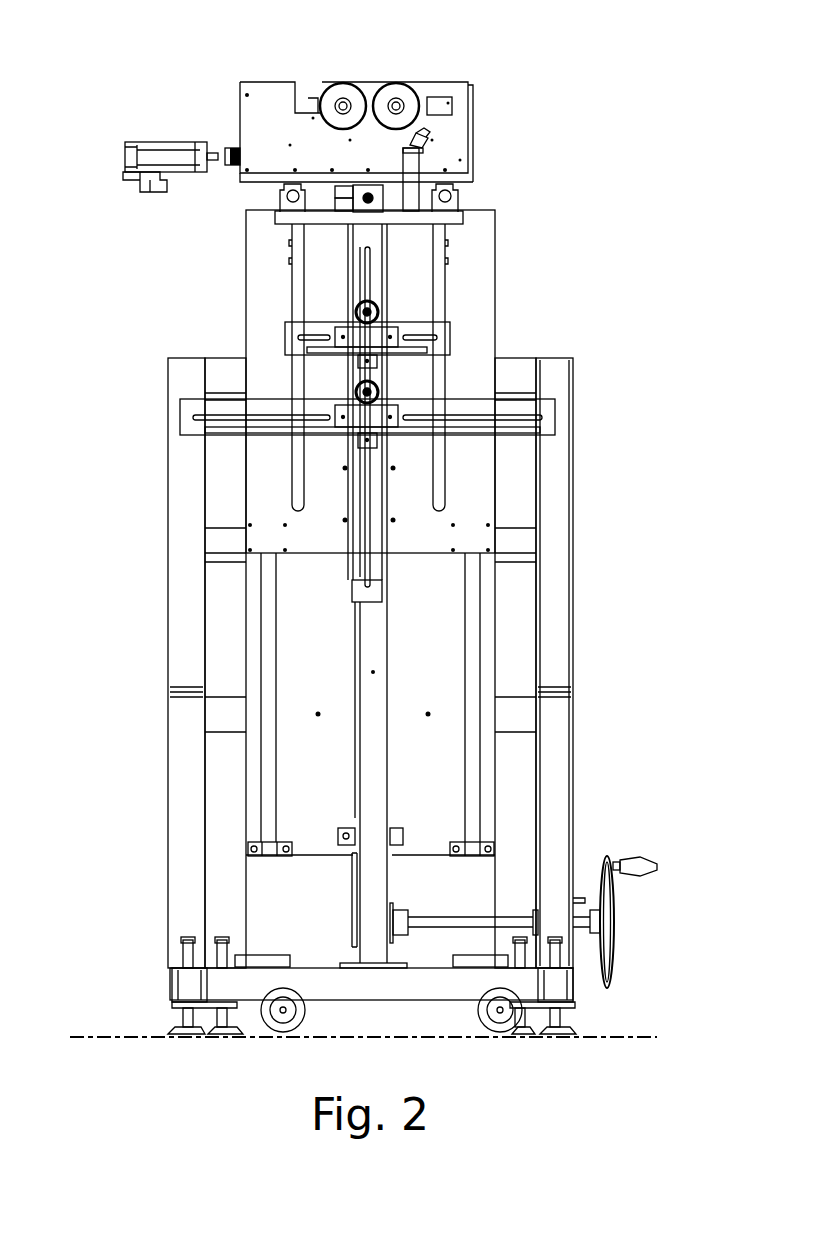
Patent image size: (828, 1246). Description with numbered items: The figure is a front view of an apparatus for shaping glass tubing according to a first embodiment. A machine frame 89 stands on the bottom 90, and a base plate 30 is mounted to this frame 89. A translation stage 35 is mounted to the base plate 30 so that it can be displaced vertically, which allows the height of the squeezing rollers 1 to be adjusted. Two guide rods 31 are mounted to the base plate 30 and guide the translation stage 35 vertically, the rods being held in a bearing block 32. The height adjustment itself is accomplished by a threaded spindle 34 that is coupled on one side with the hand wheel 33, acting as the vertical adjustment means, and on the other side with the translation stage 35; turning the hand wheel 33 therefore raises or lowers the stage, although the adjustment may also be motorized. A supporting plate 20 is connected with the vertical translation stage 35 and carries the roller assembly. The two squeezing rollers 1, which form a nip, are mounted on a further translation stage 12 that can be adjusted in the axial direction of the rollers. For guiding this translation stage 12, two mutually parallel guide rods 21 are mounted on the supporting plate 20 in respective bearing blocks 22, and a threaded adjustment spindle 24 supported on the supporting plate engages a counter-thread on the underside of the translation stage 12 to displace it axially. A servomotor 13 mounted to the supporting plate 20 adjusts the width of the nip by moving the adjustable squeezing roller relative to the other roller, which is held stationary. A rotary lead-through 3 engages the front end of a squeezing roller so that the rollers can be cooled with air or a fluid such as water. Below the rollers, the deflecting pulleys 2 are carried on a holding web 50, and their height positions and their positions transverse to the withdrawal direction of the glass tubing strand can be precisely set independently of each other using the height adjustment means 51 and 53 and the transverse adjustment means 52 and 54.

The squeezing rollers 1 is at (342, 88).
The deflecting pulleys 2 is at (357, 312).
The rotary lead-through 3 is at (405, 100).
The translation stage 12 is at (460, 128).
The servomotor 13 is at (147, 150).
The supporting plate 20 is at (410, 218).
The guide rods 21 is at (280, 195).
The bearing blocks 22 is at (277, 212).
The threaded adjustment spindle 24 is at (367, 188).
The base plate 30 is at (452, 612).
The guide rods 31 is at (269, 602).
The bearing block 32 is at (275, 856).
The hand wheel 33 is at (608, 937).
The threaded spindle 34 is at (388, 762).
The translation stage 35 is at (480, 263).
The holding web 50 is at (377, 882).
The height adjustment means 51 is at (378, 583).
The transverse adjustment means 52 is at (543, 407).
The height adjustment means 53 is at (377, 288).
The transverse adjustment means 54 is at (447, 333).
The machine frame 89 is at (560, 792).
The bottom 90 is at (93, 1037).